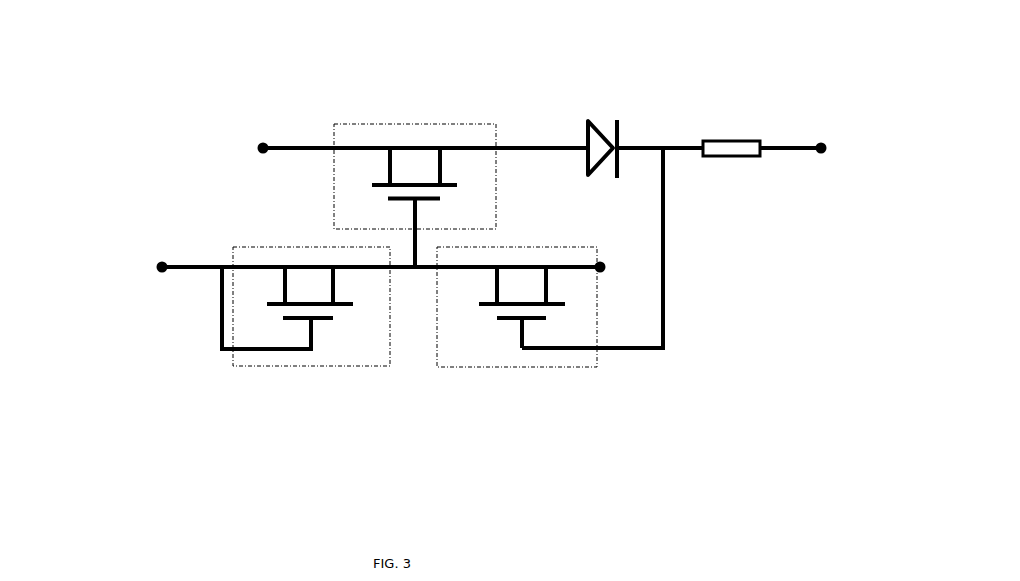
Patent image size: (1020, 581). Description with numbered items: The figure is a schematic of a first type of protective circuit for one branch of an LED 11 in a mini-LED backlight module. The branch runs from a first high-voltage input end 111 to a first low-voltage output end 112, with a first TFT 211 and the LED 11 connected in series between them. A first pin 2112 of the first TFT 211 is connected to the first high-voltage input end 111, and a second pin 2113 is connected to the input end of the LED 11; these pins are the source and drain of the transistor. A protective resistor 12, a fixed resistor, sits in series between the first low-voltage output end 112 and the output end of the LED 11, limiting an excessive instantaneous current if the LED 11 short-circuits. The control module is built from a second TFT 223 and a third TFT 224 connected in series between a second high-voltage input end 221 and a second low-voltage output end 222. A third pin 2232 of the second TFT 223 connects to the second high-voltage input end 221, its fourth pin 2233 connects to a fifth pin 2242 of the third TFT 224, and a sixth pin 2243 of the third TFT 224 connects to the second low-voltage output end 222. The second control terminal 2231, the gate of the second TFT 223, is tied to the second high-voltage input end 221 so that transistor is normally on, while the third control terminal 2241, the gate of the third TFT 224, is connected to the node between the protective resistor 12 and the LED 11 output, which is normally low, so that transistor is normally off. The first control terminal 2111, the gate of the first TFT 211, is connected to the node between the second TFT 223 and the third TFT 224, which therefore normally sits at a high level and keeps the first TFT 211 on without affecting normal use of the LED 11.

The LED 11 is at (603, 128).
The protective resistor 12 is at (731, 147).
The first high-voltage input end 111 is at (265, 138).
The first low-voltage output end 112 is at (822, 135).
The first TFT 211 is at (439, 137).
The first control terminal 2111 is at (415, 213).
The first pin 2112 is at (390, 167).
The second pin 2113 is at (440, 167).
The second high-voltage input end 221 is at (163, 280).
The second low-voltage output end 222 is at (603, 280).
The second TFT 223 is at (282, 370).
The third TFT 224 is at (489, 370).
The second control terminal 2231 is at (301, 308).
The third pin 2232 is at (285, 283).
The fourth pin 2233 is at (333, 283).
The third control terminal 2241 is at (522, 336).
The fifth pin 2242 is at (497, 285).
The sixth pin 2243 is at (546, 285).